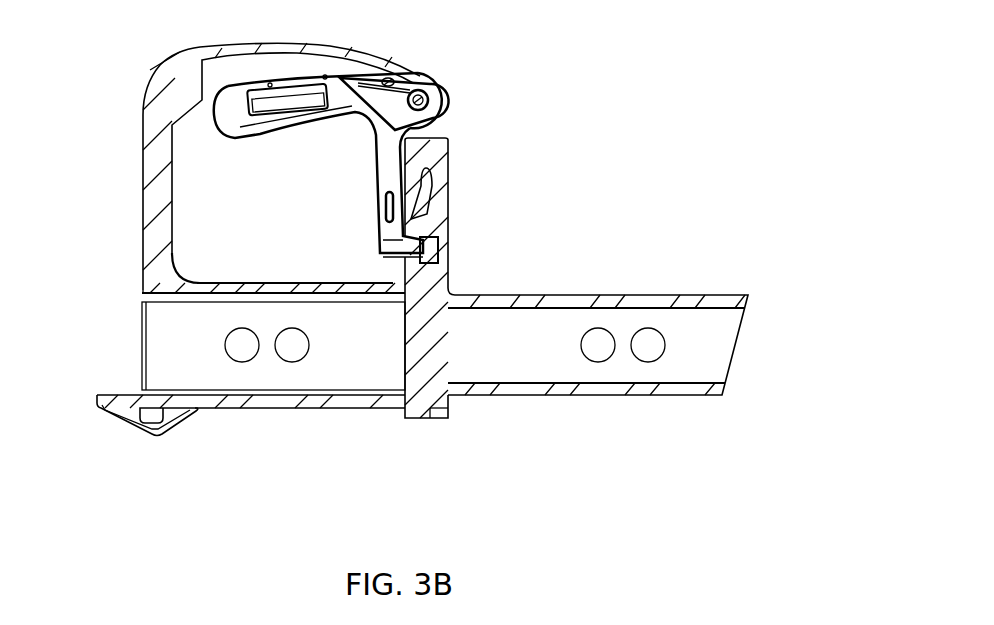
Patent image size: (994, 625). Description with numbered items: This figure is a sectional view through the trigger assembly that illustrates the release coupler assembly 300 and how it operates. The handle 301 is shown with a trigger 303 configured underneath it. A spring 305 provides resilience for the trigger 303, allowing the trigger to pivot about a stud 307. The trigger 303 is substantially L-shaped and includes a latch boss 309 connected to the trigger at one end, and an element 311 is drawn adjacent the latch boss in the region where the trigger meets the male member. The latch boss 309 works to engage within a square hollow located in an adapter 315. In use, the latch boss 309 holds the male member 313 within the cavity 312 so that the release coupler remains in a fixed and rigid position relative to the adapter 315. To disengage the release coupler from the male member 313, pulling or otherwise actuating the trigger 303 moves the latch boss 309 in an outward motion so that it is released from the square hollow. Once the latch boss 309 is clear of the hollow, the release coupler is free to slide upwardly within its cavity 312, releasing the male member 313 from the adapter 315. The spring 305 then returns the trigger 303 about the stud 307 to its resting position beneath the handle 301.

The release coupler assembly 300 is at (775, 502).
The handle 301 is at (315, 50).
The trigger 303 is at (335, 75).
The spring 305 is at (358, 83).
The stud 307 is at (428, 98).
The latch boss 309 is at (422, 243).
The hook block 311 is at (423, 260).
The cavity 312 is at (412, 218).
The male member 313 is at (435, 283).
The adapter 315 is at (560, 315).